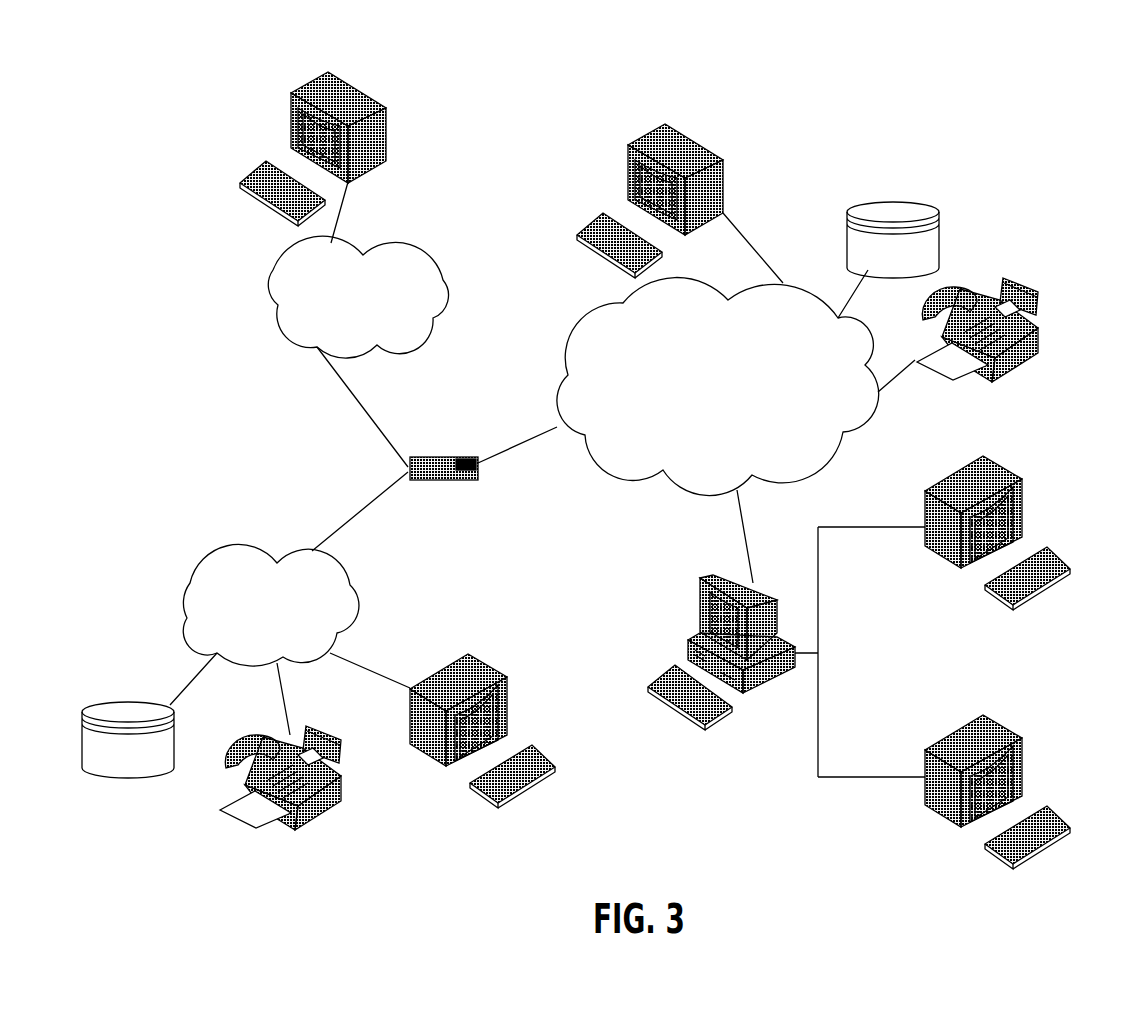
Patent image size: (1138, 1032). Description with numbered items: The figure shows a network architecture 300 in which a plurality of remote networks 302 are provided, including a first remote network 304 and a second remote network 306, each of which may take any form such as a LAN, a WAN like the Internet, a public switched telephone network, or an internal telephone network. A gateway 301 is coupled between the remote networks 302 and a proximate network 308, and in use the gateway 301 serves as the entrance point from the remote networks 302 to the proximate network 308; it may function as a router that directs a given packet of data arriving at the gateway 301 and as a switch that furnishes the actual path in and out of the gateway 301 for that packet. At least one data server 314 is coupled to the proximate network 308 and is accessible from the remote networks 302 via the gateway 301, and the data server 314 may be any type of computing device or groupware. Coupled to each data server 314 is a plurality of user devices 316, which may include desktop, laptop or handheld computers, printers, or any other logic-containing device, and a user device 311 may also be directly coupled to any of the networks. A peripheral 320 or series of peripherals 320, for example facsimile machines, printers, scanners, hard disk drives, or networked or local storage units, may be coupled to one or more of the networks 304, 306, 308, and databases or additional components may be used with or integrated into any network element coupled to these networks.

The network architecture 300 is at (643, 41).
The gateway 301 is at (445, 452).
The remote networks 302 is at (259, 380).
The first remote network 304 is at (188, 580).
The second remote network 306 is at (445, 308).
The proximate network 308 is at (842, 449).
The user device 311 is at (725, 192).
The data server 314 is at (698, 607).
The user devices 316 is at (388, 138).
The peripheral 320 is at (893, 201).